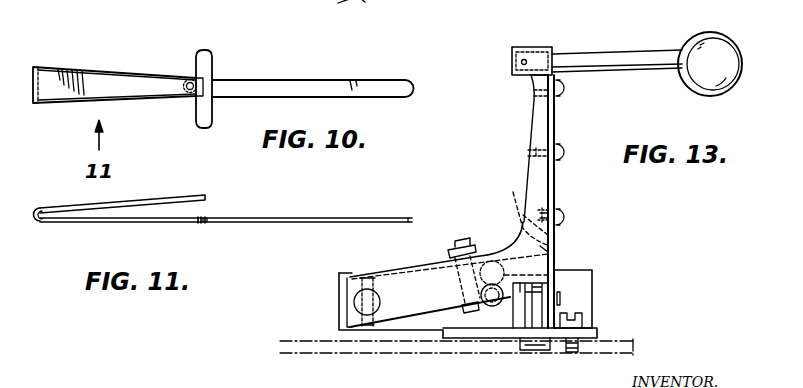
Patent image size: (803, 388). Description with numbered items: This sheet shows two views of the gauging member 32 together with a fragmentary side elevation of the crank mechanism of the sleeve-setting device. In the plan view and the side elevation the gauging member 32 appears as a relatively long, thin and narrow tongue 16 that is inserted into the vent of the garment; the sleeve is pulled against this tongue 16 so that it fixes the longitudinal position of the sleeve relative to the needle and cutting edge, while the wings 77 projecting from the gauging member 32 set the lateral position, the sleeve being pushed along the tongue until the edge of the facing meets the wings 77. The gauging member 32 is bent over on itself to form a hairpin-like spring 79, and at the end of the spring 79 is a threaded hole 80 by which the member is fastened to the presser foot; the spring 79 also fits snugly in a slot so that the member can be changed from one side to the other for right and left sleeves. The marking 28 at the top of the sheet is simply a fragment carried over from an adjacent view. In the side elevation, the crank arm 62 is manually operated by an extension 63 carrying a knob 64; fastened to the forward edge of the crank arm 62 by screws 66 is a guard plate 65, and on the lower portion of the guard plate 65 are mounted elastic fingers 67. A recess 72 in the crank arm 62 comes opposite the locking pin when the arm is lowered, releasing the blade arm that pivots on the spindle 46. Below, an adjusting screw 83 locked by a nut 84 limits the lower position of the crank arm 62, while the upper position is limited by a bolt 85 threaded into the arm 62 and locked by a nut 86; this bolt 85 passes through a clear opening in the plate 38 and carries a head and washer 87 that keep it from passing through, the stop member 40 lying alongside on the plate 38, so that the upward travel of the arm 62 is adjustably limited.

In FIG. 10, the rod 16 is at (315, 73).
In FIG. 11, the rod 16 is at (308, 218).
In FIG. 10, the frame member 28 is at (365, 2).
In FIG. 10, the gauging member 32 is at (340, 3).
In FIG. 13, the plate 38 is at (597, 332).
In FIG. 13, the stop member 40 is at (568, 314).
In FIG. 13, the spindle 46 is at (572, 285).
In FIG. 13, the crank arm 62 is at (414, 285).
In FIG. 13, the extension 63 is at (622, 58).
In FIG. 13, the knob 64 is at (712, 50).
In FIG. 13, the guard plate 65 is at (556, 181).
In FIG. 13, the screws 66 is at (558, 88).
In FIG. 13, the elastic fingers 67 is at (522, 212).
In FIG. 13, the recess 72 is at (558, 262).
In FIG. 10, the wings 77 is at (203, 56).
In FIG. 11, the wings 77 is at (196, 223).
In FIG. 10, the hairpin-like spring 79 is at (98, 83).
In FIG. 11, the hairpin-like spring 79 is at (80, 201).
In FIG. 10, the threaded hole 80 is at (194, 84).
In FIG. 13, the adjusting screw 83 is at (465, 310).
In FIG. 13, the nut 84 is at (462, 245).
In FIG. 13, the bolt 85 is at (496, 318).
In FIG. 13, the nut 86 is at (560, 290).
In FIG. 13, the head and washer 87 is at (535, 352).